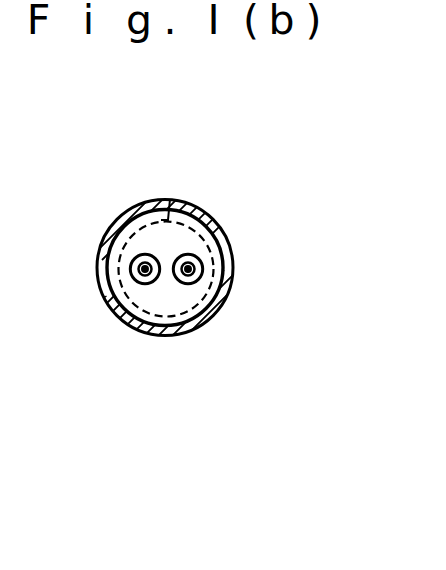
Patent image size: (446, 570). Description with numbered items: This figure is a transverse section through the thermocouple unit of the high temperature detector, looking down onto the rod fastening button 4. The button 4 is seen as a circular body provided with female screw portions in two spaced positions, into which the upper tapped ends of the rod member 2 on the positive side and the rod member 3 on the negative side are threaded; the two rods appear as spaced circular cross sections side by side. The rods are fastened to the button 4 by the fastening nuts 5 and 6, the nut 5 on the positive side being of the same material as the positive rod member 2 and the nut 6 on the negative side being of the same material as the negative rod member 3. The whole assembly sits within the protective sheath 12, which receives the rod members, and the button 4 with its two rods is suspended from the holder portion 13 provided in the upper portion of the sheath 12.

The rod member on the positive side 2 is at (146, 278).
The rod member on the negative side 3 is at (191, 278).
The rod fastening button 4 is at (168, 305).
The fastening nut 5 is at (141, 256).
The fastening nut 6 is at (188, 255).
The protective sheath 12 is at (105, 297).
The holder portion 13 is at (170, 199).